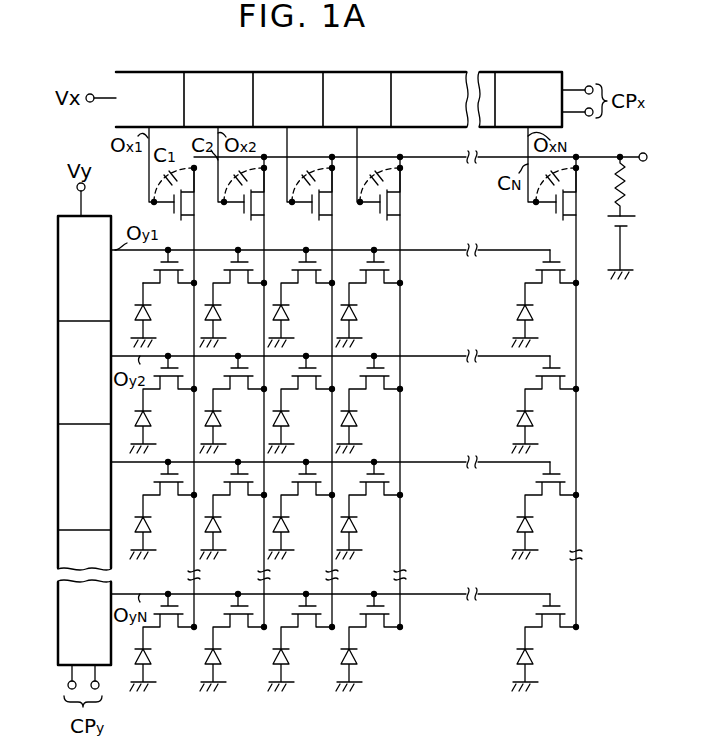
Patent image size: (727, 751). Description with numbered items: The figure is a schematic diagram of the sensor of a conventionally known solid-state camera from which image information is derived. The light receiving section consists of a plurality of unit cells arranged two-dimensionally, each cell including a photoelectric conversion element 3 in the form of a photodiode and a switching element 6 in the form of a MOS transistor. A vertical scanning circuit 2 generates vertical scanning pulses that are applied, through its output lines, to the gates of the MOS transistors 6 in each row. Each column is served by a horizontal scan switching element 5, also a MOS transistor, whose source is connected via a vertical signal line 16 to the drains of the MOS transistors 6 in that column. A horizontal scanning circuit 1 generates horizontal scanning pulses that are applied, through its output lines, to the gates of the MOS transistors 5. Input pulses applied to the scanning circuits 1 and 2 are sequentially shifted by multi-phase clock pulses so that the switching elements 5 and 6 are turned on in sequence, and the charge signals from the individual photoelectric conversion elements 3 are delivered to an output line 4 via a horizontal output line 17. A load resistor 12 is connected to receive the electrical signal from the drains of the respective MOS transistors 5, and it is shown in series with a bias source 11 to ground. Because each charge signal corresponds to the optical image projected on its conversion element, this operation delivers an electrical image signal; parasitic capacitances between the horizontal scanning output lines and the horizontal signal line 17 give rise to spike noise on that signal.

The horizontal scanning circuit 1 is at (537, 73).
The vertical scanning circuit 2 is at (58, 355).
The photoelectric conversion element 3 is at (147, 313).
The output line 4 is at (638, 155).
The horizontal scan switching element 5 is at (186, 204).
The switching element 6 is at (164, 278).
The bias voltage source 11 is at (632, 213).
The load resistor 12 is at (632, 182).
The vertical signal line 16 is at (196, 238).
The horizontal output line 17 is at (386, 157).